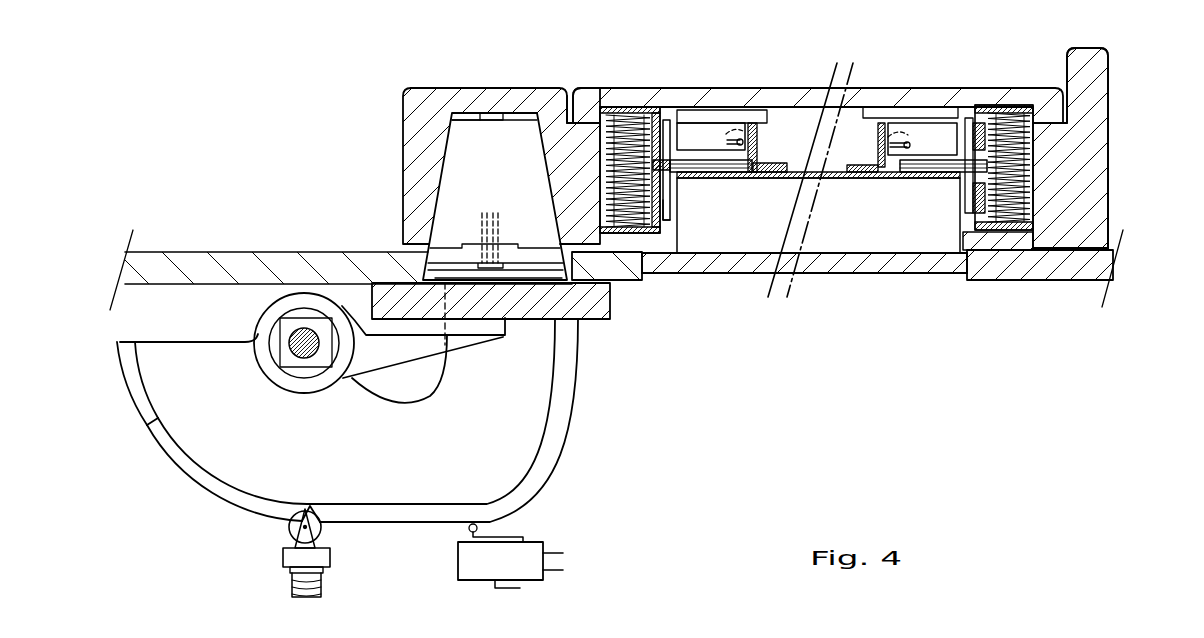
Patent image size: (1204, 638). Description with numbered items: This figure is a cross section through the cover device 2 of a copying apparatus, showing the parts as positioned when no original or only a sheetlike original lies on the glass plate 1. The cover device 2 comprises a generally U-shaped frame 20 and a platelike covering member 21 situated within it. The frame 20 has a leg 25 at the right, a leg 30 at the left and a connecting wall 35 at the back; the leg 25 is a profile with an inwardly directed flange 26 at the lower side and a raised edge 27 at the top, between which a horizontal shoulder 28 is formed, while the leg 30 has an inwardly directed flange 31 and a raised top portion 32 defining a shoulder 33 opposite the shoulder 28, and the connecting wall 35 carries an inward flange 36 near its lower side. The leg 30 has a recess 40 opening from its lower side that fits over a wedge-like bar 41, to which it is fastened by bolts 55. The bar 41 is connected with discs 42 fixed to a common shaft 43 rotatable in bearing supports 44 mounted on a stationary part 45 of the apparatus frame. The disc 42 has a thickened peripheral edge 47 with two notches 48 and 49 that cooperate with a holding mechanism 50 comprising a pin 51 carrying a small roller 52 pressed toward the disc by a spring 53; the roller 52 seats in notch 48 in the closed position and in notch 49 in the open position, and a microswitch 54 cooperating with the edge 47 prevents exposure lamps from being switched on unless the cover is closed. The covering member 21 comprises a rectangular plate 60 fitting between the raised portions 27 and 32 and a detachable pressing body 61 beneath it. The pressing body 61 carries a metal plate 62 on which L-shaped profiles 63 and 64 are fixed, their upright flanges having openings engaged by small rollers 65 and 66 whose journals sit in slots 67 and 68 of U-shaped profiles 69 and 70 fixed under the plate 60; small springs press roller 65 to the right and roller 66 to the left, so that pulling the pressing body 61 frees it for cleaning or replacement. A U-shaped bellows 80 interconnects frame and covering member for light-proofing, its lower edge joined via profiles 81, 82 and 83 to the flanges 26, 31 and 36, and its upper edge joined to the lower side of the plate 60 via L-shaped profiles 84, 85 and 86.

The glass plate 1 is at (865, 266).
The cover device 2 is at (869, 81).
The U-shaped frame 20 is at (512, 84).
The covering member 21 is at (790, 84).
The leg 25 is at (1114, 203).
The flange 26 is at (1000, 258).
The raised edge 27 is at (1090, 72).
The shoulder 28 is at (1060, 137).
The leg 30 is at (396, 150).
The flange 31 is at (642, 253).
The raised top portion 32 is at (497, 100).
The shoulder 33 is at (580, 110).
The connecting wall 35 is at (607, 122).
The flange 36 is at (961, 247).
The recess 40 is at (533, 108).
The wedge-like bar 41 is at (472, 199).
The disc 42 is at (322, 443).
The shaft 43 is at (293, 353).
The bearing support 44 is at (276, 311).
The stationary part 45 is at (540, 319).
The thickened peripheral edge 47 is at (207, 490).
The notch 48 is at (304, 503).
The notch 49 is at (148, 430).
The holding mechanism 50 is at (328, 537).
The pin 51 is at (321, 583).
The small roller 52 is at (296, 515).
The spring 53 is at (291, 582).
The microswitch 54 is at (460, 560).
The bolt 55 is at (488, 111).
The plate 60 is at (757, 97).
The pressing body 61 is at (813, 256).
The metal plate 62 is at (780, 179).
The L-shaped profile 63 is at (762, 168).
The L-shaped profile 64 is at (874, 167).
The small roller 65 is at (742, 148).
The small roller 66 is at (888, 153).
The slot 67 is at (734, 146).
The slot 68 is at (905, 153).
The U-shaped profile 69 is at (689, 146).
The U-shaped profile 70 is at (916, 146).
The bellows 80 is at (1047, 173).
The profile 81 is at (1040, 249).
The profile 82 is at (673, 236).
The profile 83 is at (676, 211).
The L-shaped profile 84 is at (637, 113).
The L-shaped profile 85 is at (672, 112).
The L-shaped profile 86 is at (998, 106).